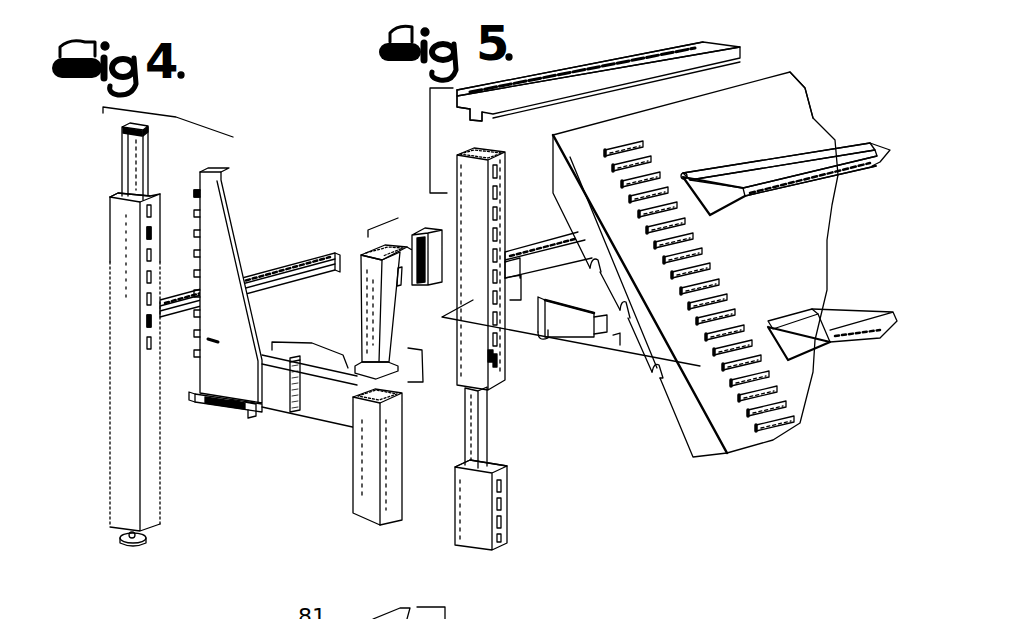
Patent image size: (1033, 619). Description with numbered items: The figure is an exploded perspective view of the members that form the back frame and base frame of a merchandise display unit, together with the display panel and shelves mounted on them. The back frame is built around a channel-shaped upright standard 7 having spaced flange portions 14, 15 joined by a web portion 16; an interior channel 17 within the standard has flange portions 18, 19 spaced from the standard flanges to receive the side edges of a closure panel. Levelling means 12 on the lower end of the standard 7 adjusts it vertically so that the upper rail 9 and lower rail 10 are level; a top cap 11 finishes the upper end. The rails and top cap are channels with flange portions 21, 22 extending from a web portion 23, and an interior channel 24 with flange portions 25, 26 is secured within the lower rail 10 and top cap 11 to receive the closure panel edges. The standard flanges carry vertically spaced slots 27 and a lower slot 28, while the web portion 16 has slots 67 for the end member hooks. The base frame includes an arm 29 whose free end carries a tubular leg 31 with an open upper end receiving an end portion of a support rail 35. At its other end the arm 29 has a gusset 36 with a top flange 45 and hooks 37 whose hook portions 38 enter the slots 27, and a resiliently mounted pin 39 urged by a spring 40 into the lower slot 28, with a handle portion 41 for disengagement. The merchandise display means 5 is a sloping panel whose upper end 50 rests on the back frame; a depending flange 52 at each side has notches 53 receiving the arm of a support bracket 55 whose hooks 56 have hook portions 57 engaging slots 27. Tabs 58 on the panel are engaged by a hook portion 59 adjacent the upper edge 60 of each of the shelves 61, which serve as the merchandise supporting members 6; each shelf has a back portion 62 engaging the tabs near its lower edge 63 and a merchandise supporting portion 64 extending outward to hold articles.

In FIG. 5, the merchandise display means 5 is at (787, 98).
In FIG. 5, the merchandise supporting members 6 is at (842, 147).
In FIG. 4, the upright standard 7 is at (120, 382).
In FIG. 5, the upright standard 7 is at (470, 512).
In FIG. 5, the upper rail 9 is at (540, 248).
In FIG. 4, the lower rail 10 is at (276, 257).
In FIG. 5, the top cap 11 is at (580, 74).
In FIG. 4, the levelling means 12 is at (143, 535).
In FIG. 4, the flange portion 14 is at (158, 430).
In FIG. 5, the flange portion 14 is at (505, 480).
In FIG. 4, the flange portion 15 is at (113, 190).
In FIG. 5, the flange portion 15 is at (462, 466).
In FIG. 4, the web portion 16 is at (118, 280).
In FIG. 4, the interior channel 17 is at (127, 171).
In FIG. 5, the interior channel 17 is at (490, 430).
In FIG. 4, the flange portion 18 is at (147, 132).
In FIG. 4, the flange portion 19 is at (132, 126).
In FIG. 4, the flange portion 21 is at (332, 268).
In FIG. 5, the flange portion 21 is at (574, 90).
In FIG. 4, the flange portion 22 is at (338, 265).
In FIG. 5, the flange portion 22 is at (455, 100).
In FIG. 5, the web portion 23 is at (540, 62).
In FIG. 5, the interior channel 24 is at (479, 124).
In FIG. 5, the flange portion 25 is at (525, 108).
In FIG. 5, the flange portion 26 is at (455, 112).
In FIG. 4, the slots 27 is at (147, 232).
In FIG. 5, the slots 27 is at (500, 378).
In FIG. 4, the lower slot 28 is at (148, 382).
In FIG. 4, the arm 29 is at (345, 418).
In FIG. 4, the leg 31 is at (358, 498).
In FIG. 4, the support rail 35 is at (437, 279).
In FIG. 4, the gusset 36 is at (230, 250).
In FIG. 4, the hooks 37 is at (198, 208).
In FIG. 4, the hook portion 38 is at (198, 213).
In FIG. 4, the resiliently mounted pin 39 is at (236, 412).
In FIG. 4, the spring 40 is at (225, 408).
In FIG. 4, the handle portion 41 is at (258, 412).
In FIG. 4, the top flange 45 is at (228, 170).
In FIG. 5, the upper end 50 is at (758, 75).
In FIG. 5, the depending flange 52 is at (695, 440).
In FIG. 5, the notches 53 is at (655, 385).
In FIG. 5, the support bracket 55 is at (565, 311).
In FIG. 5, the hooks 56 is at (534, 298).
In FIG. 5, the hook portions 57 is at (540, 336).
In FIG. 5, the tabs 58 is at (645, 135).
In FIG. 5, the hook portion 59 is at (692, 150).
In FIG. 5, the upper edge 60 is at (790, 152).
In FIG. 5, the shelves 61 is at (740, 208).
In FIG. 5, the back portion 62 is at (843, 170).
In FIG. 5, the lower edge 63 is at (773, 197).
In FIG. 5, the merchandise supporting portion 64 is at (817, 182).
In FIG. 5, the slots 67 is at (462, 355).